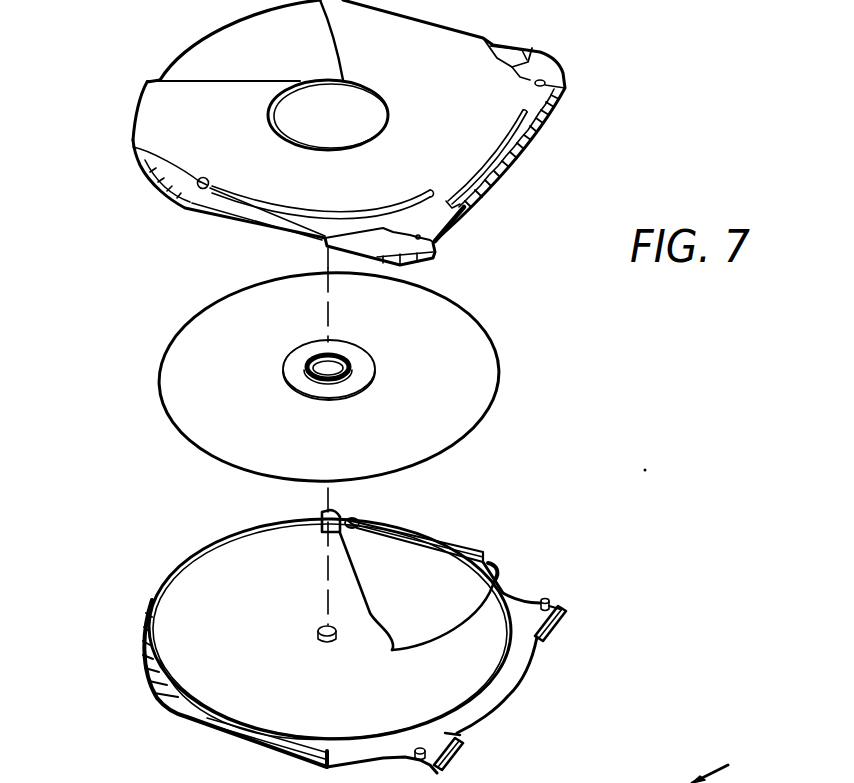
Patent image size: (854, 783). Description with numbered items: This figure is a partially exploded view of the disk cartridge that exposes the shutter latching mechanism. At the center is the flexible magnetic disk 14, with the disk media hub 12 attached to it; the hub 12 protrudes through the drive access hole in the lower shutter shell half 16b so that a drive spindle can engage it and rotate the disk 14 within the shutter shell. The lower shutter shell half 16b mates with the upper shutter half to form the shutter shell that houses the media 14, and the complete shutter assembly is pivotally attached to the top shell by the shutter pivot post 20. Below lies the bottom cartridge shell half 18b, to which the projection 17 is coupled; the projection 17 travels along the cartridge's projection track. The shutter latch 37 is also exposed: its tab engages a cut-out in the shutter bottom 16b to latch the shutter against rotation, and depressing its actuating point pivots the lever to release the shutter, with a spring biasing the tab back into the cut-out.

The disk media hub 12 is at (297, 364).
The flexible magnetic disk 14 is at (217, 400).
The lower shutter shell half 16b is at (274, 528).
The projection 17 is at (135, 147).
The bottom cartridge shell half 18b is at (430, 535).
The shutter pivot post 20 is at (317, 628).
The shutter latch 37 is at (150, 637).